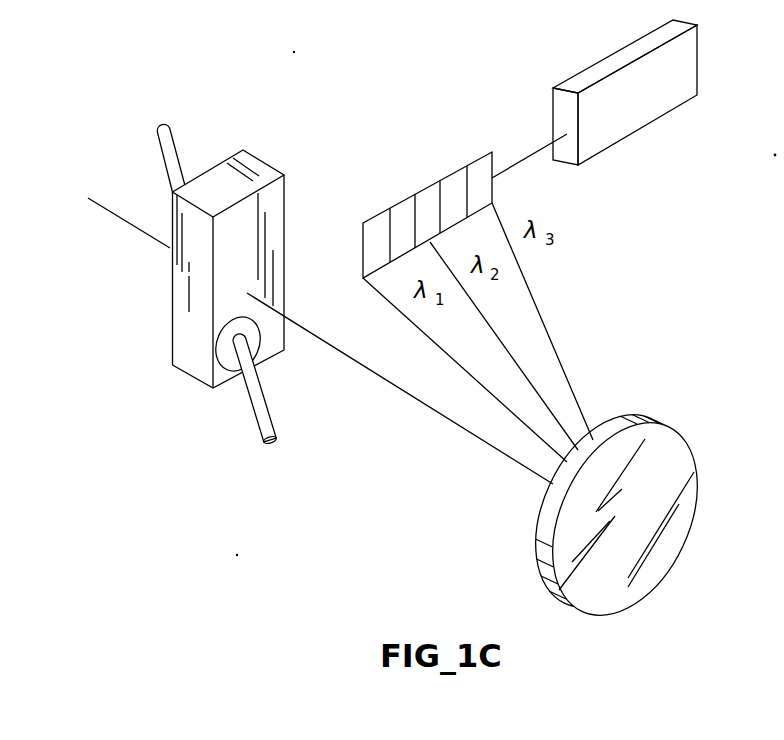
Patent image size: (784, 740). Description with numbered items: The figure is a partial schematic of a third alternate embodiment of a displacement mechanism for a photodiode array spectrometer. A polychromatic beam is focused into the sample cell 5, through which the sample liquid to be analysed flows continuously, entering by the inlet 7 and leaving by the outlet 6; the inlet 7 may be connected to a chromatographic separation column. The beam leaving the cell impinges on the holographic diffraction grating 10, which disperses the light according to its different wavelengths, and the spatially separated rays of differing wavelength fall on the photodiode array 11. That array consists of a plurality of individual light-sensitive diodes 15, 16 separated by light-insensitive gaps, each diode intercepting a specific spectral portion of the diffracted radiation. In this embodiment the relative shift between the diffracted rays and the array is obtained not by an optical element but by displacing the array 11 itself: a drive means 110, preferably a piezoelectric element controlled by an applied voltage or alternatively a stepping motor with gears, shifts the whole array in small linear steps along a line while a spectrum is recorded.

The sample cell 5 is at (255, 160).
The outlet 6 is at (173, 128).
The inlet 7 is at (265, 447).
The holographic diffraction grating 10 is at (633, 537).
The photodiode array 11 is at (439, 151).
The light-sensitive diode 15 is at (372, 228).
The light-sensitive diode 16 is at (402, 215).
The drive means 110 is at (690, 75).